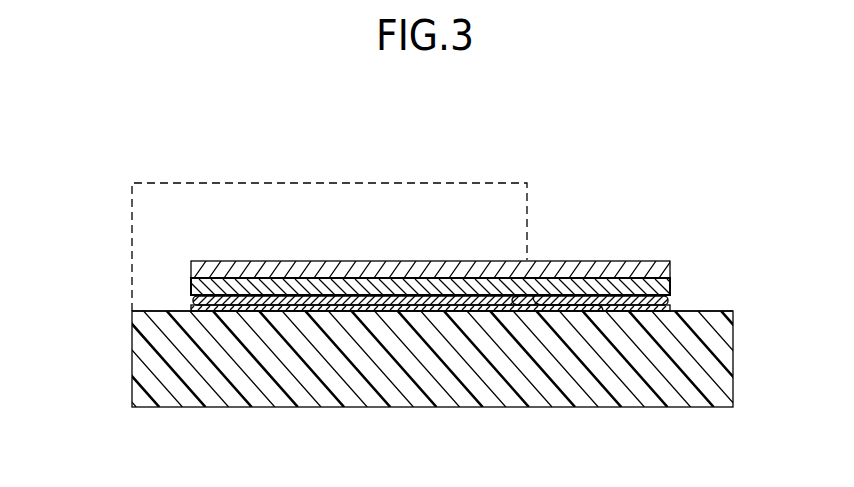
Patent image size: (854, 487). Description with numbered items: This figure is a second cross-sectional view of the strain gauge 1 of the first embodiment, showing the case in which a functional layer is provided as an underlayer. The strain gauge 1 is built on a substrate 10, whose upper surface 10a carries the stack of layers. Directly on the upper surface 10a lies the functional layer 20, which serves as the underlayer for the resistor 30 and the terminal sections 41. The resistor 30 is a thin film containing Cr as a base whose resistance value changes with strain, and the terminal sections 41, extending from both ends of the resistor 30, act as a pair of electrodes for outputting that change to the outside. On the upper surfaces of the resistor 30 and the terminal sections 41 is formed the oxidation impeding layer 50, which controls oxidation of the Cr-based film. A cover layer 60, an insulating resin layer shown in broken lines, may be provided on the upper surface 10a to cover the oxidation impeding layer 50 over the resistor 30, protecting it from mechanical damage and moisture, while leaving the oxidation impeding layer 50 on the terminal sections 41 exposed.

The strain gauge 1 is at (80, 162).
The substrate 10 is at (148, 358).
The upper surface of the substrate 10a is at (160, 311).
The functional layer 20 is at (655, 295).
The resistor 30 is at (357, 311).
The terminal section 41 is at (603, 311).
The oxidation impeding layer 50 is at (655, 267).
The cover layer 60 is at (422, 183).